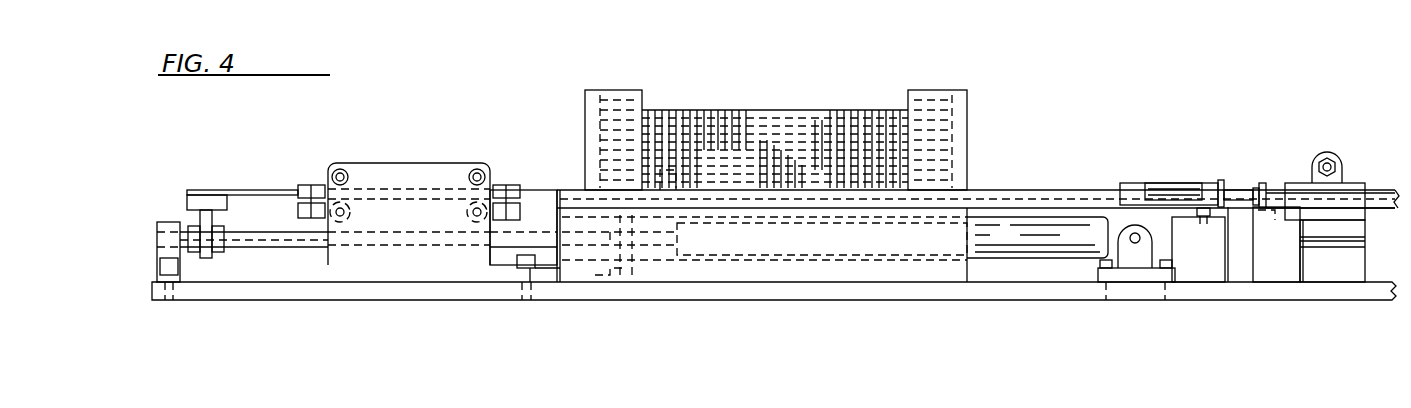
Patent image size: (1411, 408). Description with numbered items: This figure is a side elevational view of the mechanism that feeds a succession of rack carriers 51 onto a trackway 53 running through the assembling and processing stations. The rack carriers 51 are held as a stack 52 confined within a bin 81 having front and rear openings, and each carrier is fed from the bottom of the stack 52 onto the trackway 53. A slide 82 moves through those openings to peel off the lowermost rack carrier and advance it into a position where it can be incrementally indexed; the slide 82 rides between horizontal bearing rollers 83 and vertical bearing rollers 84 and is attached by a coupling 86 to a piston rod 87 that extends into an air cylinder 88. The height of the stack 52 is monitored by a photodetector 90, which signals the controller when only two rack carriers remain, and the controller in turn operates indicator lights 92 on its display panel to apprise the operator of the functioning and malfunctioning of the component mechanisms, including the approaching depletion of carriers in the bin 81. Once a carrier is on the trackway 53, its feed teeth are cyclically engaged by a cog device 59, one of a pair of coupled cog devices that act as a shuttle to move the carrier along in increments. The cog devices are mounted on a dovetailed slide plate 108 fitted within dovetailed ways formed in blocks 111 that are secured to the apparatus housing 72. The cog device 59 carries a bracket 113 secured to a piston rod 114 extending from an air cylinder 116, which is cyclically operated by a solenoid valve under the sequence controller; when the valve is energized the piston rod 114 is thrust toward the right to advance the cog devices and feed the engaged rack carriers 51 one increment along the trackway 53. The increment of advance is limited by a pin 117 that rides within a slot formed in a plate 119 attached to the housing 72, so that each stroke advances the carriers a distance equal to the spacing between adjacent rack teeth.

The rack carrier 51 is at (850, 135).
The stack 52 is at (735, 110).
The trackway 53 is at (1010, 190).
The cog device 59 is at (1311, 142).
The apparatus housing 72 is at (670, 280).
The bin 81 is at (622, 90).
The slide 82 is at (245, 190).
The horizontal bearing rollers 83 is at (305, 185).
The vertical bearing rollers 84 is at (467, 173).
The coupling 86 is at (205, 258).
The piston rod 87 is at (257, 240).
The air cylinder 88 is at (987, 260).
The photodetector 90 is at (668, 172).
The lights 92 is at (1335, 160).
The dovetailed slide plate 108 is at (1352, 200).
The blocks 111 is at (1340, 237).
The bracket 113 is at (1260, 183).
The piston rod 114 is at (1230, 190).
The air cylinder 116 is at (1158, 183).
The pin 117 is at (1265, 212).
The plate 119 is at (1253, 265).